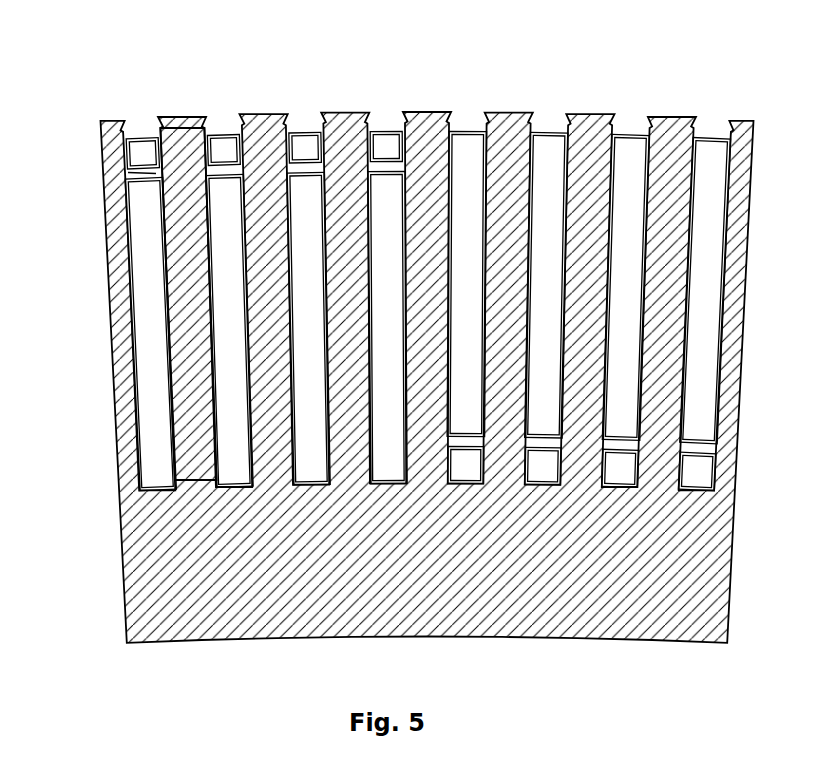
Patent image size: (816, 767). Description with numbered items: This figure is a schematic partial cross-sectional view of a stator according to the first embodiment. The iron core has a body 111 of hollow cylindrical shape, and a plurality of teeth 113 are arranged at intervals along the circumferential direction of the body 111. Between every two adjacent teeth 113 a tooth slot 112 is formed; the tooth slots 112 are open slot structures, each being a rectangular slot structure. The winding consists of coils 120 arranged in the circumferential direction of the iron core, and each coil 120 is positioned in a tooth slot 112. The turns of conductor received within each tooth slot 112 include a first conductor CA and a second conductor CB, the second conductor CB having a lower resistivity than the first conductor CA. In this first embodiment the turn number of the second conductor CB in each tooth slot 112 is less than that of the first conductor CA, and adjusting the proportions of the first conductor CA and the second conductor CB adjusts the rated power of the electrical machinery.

The body 111 is at (637, 618).
The tooth slot 112 is at (151, 172).
The tooth 113 is at (185, 142).
The coil 120 is at (142, 126).
The first conductor CA is at (427, 310).
The second conductor CB is at (461, 310).